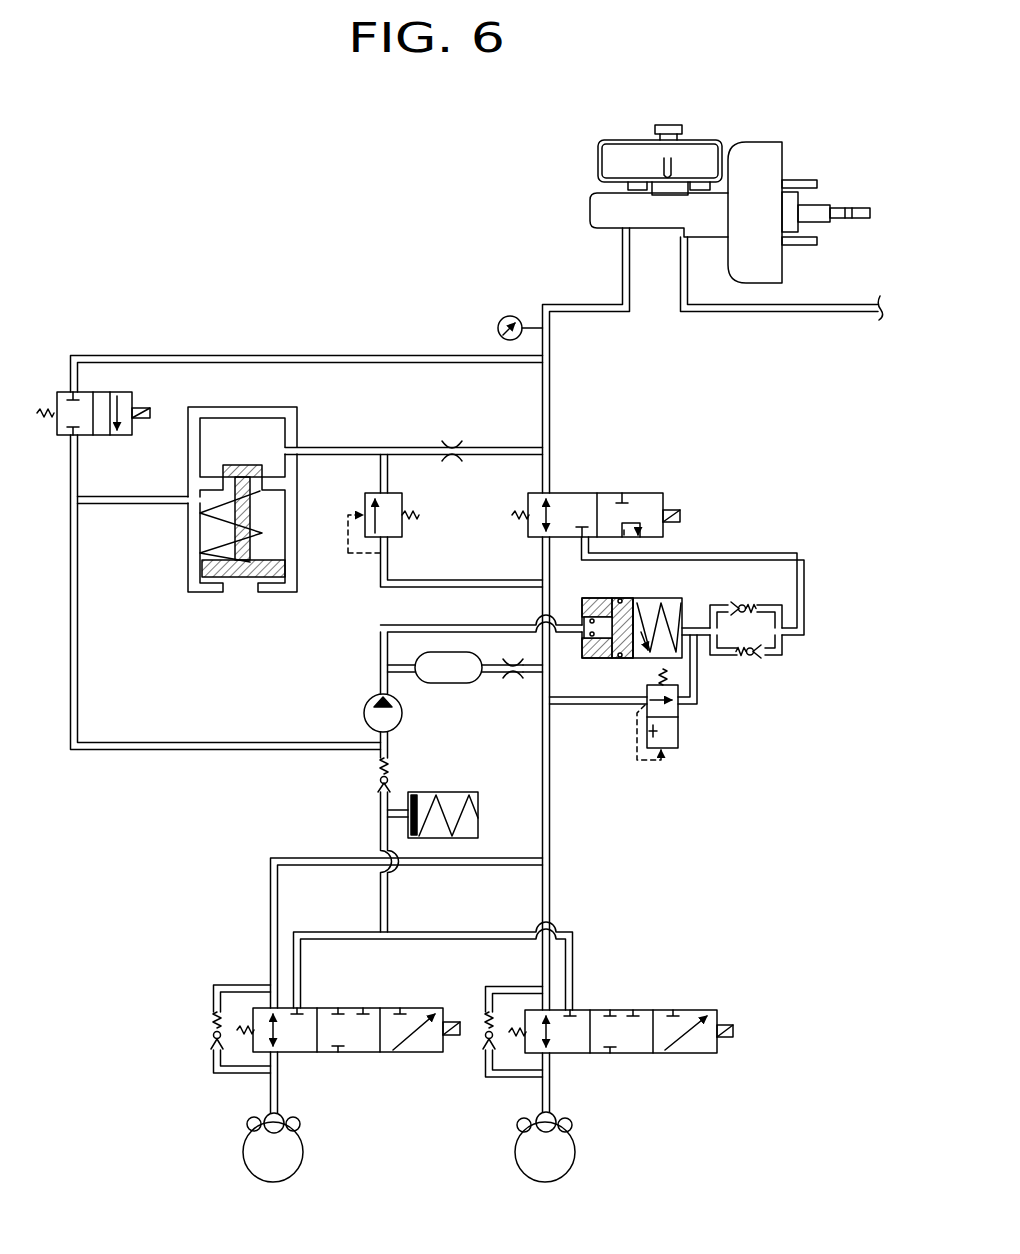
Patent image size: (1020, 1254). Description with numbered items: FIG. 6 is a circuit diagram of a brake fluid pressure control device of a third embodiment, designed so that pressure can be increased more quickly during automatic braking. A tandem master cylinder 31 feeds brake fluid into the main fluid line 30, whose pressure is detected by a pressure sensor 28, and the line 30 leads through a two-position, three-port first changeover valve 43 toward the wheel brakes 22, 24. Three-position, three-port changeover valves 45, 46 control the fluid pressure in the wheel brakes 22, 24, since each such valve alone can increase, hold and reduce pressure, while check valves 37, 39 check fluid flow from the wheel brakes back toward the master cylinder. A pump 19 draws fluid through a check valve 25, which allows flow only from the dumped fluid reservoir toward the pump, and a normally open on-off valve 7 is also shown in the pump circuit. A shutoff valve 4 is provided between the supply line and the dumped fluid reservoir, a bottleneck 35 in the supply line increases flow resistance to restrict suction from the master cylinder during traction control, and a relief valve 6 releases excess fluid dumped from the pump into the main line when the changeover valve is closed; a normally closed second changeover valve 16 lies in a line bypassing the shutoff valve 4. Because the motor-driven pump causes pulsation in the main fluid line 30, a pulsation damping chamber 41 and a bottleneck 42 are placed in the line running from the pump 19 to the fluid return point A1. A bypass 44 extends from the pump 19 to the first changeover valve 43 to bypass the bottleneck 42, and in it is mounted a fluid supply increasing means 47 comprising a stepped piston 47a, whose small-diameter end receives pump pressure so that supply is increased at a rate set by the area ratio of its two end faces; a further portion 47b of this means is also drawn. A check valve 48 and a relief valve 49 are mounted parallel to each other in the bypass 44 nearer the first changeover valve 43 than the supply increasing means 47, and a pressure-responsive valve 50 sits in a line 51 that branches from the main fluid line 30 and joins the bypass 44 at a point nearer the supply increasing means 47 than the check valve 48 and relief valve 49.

The shutoff valve 4 is at (188, 560).
The relief valve 6 is at (406, 532).
The on-off valve 7 is at (462, 790).
The second changeover valve 16 is at (57, 392).
The pump 19 is at (364, 705).
The wheel brake 22 is at (300, 1124).
The wheel brake 24 is at (575, 1122).
The check valve 25 is at (378, 783).
The pressure sensor 28 is at (502, 318).
The main fluid line 30 is at (552, 397).
The tandem master cylinder 31 is at (594, 207).
The bottleneck 35 is at (452, 446).
The check valve 37 is at (210, 1035).
The check valve 39 is at (487, 1047).
The pulsation damping chamber 41 is at (437, 680).
The bottleneck 42 is at (513, 677).
The first changeover valve 43 is at (655, 493).
The bypass 44 is at (770, 553).
The changeover valve 45 is at (357, 1008).
The changeover valve 46 is at (625, 1010).
The fluid supply increasing means 47 is at (660, 598).
The stepped piston 47a is at (622, 600).
The valve portion 47b is at (647, 645).
The check valve 48 is at (755, 585).
The relief valve 49 is at (746, 656).
The pressure-responsive valve 50 is at (681, 733).
The line 51 is at (698, 675).
The fluid return point A1 is at (546, 665).